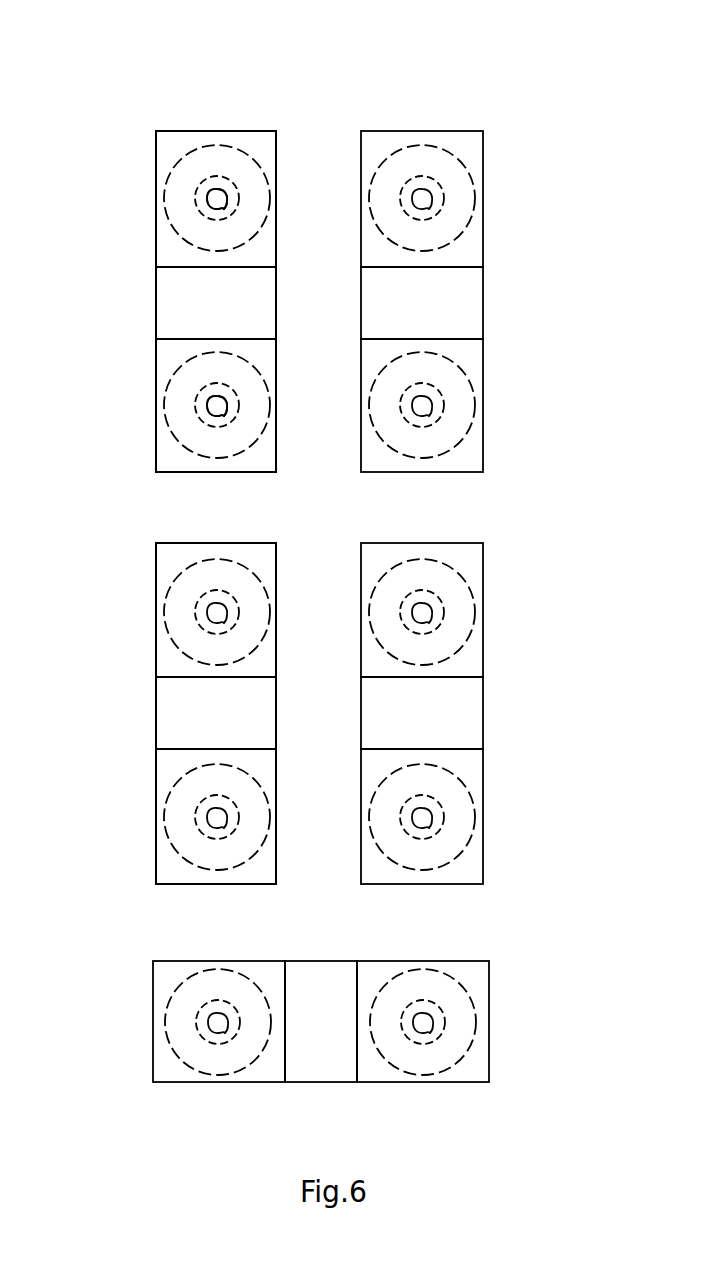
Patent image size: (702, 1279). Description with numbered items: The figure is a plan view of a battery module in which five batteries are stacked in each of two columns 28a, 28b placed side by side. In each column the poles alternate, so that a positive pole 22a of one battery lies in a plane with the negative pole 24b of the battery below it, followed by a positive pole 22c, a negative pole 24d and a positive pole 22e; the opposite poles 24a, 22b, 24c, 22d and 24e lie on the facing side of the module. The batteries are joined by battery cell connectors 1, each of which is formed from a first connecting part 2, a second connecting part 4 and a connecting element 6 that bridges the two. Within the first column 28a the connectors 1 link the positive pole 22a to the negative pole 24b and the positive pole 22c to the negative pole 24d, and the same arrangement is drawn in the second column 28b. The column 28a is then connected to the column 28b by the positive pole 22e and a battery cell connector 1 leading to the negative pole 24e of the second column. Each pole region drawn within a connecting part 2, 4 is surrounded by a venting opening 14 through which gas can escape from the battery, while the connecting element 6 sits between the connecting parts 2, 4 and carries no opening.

The battery cell connector 1 is at (175, 130).
The first connecting part 2 is at (168, 150).
The second connecting part 4 is at (170, 457).
The connecting element 6 is at (170, 298).
The venting opening 14 is at (220, 196).
The positive pole 22a is at (195, 204).
The positive pole 22b is at (443, 410).
The positive pole 22c is at (195, 618).
The positive pole 22d is at (443, 823).
The positive pole 22e is at (197, 1027).
The negative pole 24a is at (443, 205).
The negative pole 24b is at (195, 410).
The negative pole 24c is at (443, 618).
The negative pole 24d is at (195, 823).
The negative pole 24e is at (445, 1027).
The first column 28a is at (220, 83).
The second column 28b is at (427, 82).